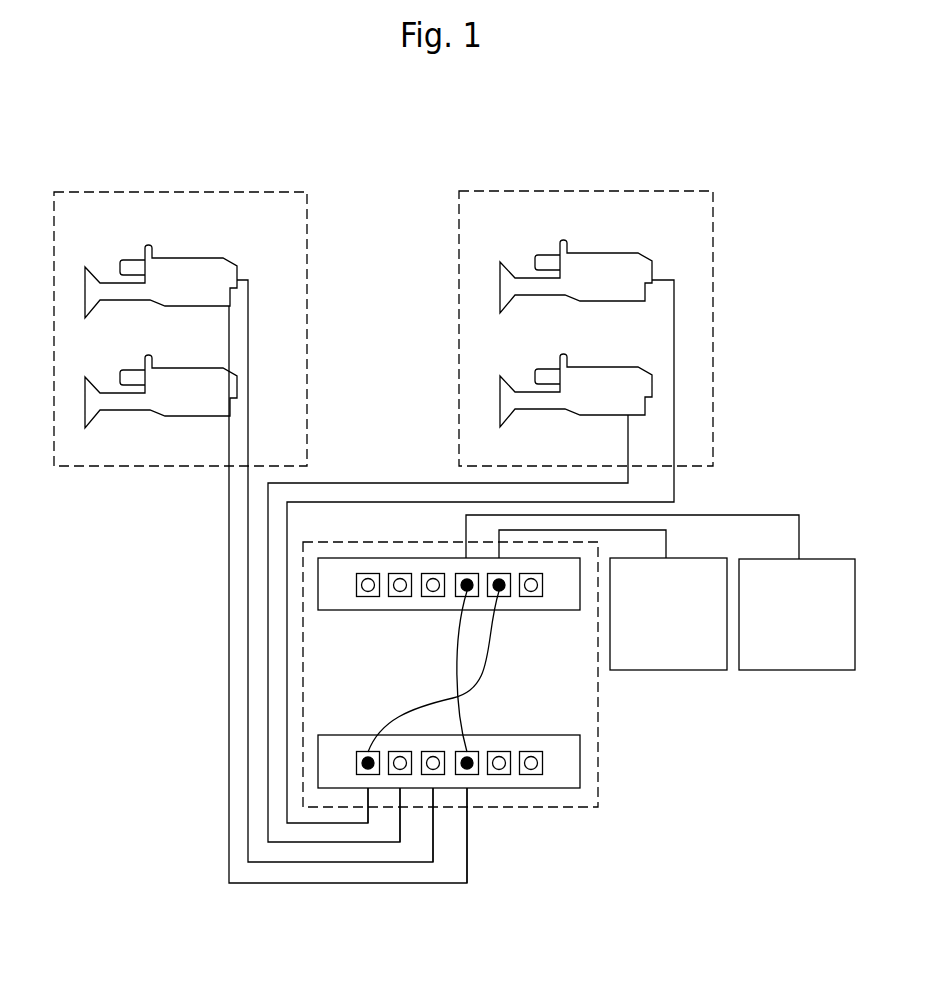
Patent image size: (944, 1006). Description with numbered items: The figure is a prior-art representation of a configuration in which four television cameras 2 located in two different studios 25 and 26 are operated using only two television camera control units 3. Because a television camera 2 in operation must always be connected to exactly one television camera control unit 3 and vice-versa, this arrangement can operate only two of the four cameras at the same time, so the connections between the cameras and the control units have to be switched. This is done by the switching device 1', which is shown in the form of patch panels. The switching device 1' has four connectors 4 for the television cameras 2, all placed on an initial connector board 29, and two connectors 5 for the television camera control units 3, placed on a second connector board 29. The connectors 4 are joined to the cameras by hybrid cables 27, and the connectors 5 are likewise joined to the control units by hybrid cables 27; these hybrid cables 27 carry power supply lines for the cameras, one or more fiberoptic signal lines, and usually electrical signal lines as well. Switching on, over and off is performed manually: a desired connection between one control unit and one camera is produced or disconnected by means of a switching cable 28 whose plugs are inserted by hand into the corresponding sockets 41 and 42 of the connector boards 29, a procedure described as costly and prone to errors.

The switching device 1' is at (496, 703).
The television camera 2 is at (220, 270).
The television camera control unit 3 is at (707, 663).
The connector 4 is at (468, 822).
The connector 5 is at (499, 535).
The studio 25 is at (283, 190).
The studio 26 is at (713, 210).
The hybrid cable 27 is at (287, 637).
The switching cable 28 is at (460, 648).
The connector board 29 is at (553, 602).
The socket 41 is at (437, 575).
The socket 42 is at (423, 773).